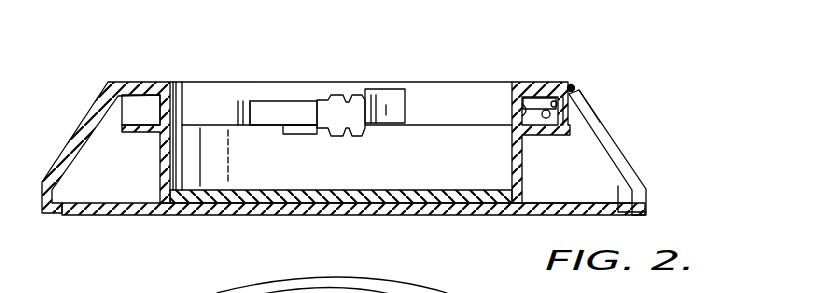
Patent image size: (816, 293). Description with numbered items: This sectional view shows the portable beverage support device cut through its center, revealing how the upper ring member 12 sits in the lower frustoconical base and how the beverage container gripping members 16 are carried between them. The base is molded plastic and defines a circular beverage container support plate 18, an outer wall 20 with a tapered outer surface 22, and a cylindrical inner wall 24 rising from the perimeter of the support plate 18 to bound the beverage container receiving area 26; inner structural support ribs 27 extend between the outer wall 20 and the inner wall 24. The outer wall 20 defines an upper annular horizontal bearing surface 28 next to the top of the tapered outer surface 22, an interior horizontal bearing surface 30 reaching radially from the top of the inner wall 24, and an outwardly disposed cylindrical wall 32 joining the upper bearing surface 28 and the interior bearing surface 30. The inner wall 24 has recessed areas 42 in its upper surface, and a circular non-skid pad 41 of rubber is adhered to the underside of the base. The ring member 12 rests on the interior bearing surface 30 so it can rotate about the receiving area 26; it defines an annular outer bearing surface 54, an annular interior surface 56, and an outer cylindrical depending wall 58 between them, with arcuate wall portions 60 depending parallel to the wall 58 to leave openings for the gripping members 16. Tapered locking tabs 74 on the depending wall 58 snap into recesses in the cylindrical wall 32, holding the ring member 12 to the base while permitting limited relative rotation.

The upper ring member 12 is at (490, 290).
The beverage container gripping member 16 is at (295, 117).
The beverage container support plate 18 is at (425, 190).
The outer wall 20 is at (618, 148).
The tapered outer surface 22 is at (593, 113).
The cylindrical inner wall 24 is at (512, 148).
The beverage container receiving area 26 is at (363, 176).
The inner structural support rib 27 is at (598, 183).
The upper annular horizontal bearing surface 28 is at (569, 87).
The interior horizontal bearing surface 30 is at (530, 108).
The cylindrical wall 32 is at (548, 100).
The non-skid pad 41 is at (123, 205).
The recessed area 42 is at (297, 128).
The annular outer bearing surface 54 is at (573, 105).
The annular interior surface 56 is at (512, 110).
The outer cylindrical depending wall 58 is at (548, 103).
The arcuate wall portion 60 is at (170, 106).
The locking tab 74 is at (120, 108).